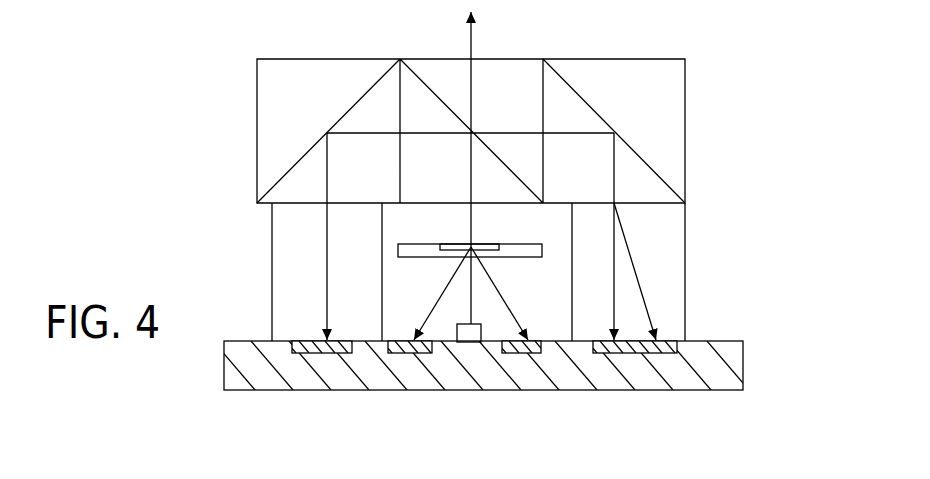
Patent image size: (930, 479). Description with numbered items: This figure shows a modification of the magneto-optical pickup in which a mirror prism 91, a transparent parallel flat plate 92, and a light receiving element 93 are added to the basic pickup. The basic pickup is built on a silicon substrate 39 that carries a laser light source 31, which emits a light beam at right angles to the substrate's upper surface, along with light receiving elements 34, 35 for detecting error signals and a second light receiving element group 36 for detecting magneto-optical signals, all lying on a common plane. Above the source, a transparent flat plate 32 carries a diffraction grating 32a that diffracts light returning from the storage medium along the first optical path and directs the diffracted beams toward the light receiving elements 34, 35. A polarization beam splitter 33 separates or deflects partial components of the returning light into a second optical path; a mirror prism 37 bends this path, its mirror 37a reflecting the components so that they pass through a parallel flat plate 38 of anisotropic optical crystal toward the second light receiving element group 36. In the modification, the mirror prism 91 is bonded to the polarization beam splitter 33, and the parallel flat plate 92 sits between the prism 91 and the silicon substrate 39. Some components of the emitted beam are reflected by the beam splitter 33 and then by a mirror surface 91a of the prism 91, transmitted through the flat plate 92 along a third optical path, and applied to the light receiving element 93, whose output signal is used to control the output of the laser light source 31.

The laser light source 31 is at (468, 342).
The transparent flat plate 32 is at (544, 258).
The diffraction grating 32a is at (480, 244).
The polarization beam splitter 33 is at (432, 59).
The light receiving element 34 is at (405, 354).
The light receiving element 35 is at (523, 354).
The second light receiving element group 36 is at (635, 354).
The mirror prism 37 is at (641, 59).
The mirror 37a is at (657, 173).
The parallel flat plate 38 is at (685, 249).
The silicon substrate 39 is at (743, 357).
The mirror prism 91 is at (282, 59).
The mirror surface 91a is at (370, 88).
The transparent parallel flat plate 92 is at (272, 249).
The light receiving element 93 is at (309, 354).